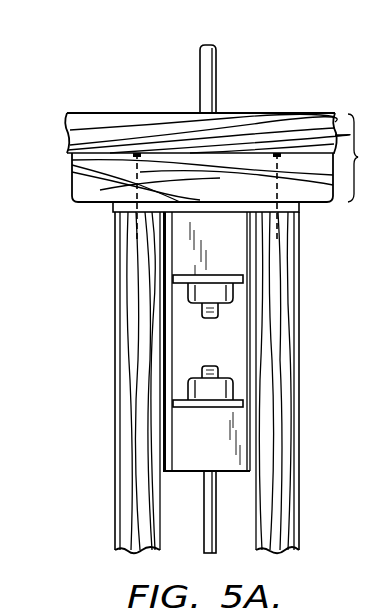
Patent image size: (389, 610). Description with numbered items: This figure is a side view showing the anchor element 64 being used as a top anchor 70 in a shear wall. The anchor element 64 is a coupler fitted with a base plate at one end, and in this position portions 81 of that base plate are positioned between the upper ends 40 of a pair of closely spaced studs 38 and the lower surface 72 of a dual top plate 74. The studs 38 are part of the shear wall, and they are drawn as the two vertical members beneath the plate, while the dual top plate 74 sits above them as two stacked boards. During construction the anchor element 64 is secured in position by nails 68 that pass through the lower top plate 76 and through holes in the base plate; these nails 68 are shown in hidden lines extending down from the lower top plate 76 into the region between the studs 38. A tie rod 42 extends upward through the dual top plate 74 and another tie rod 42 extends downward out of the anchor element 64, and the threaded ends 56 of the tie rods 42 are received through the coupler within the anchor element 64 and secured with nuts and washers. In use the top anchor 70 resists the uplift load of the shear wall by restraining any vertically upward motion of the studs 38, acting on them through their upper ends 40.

The top anchor 70 is at (315, 68).
The tie rod 42 is at (213, 76).
The dual top plate 74 is at (225, 157).
The lower top plate 76 is at (85, 181).
The lower surface 72 is at (388, 211).
The nail 68 is at (135, 177).
The portion of base plate 81 is at (118, 206).
The upper end of stud 40 is at (128, 268).
The stud 38 is at (123, 517).
The anchor element 64 is at (230, 477).
The threaded end 56 is at (222, 310).